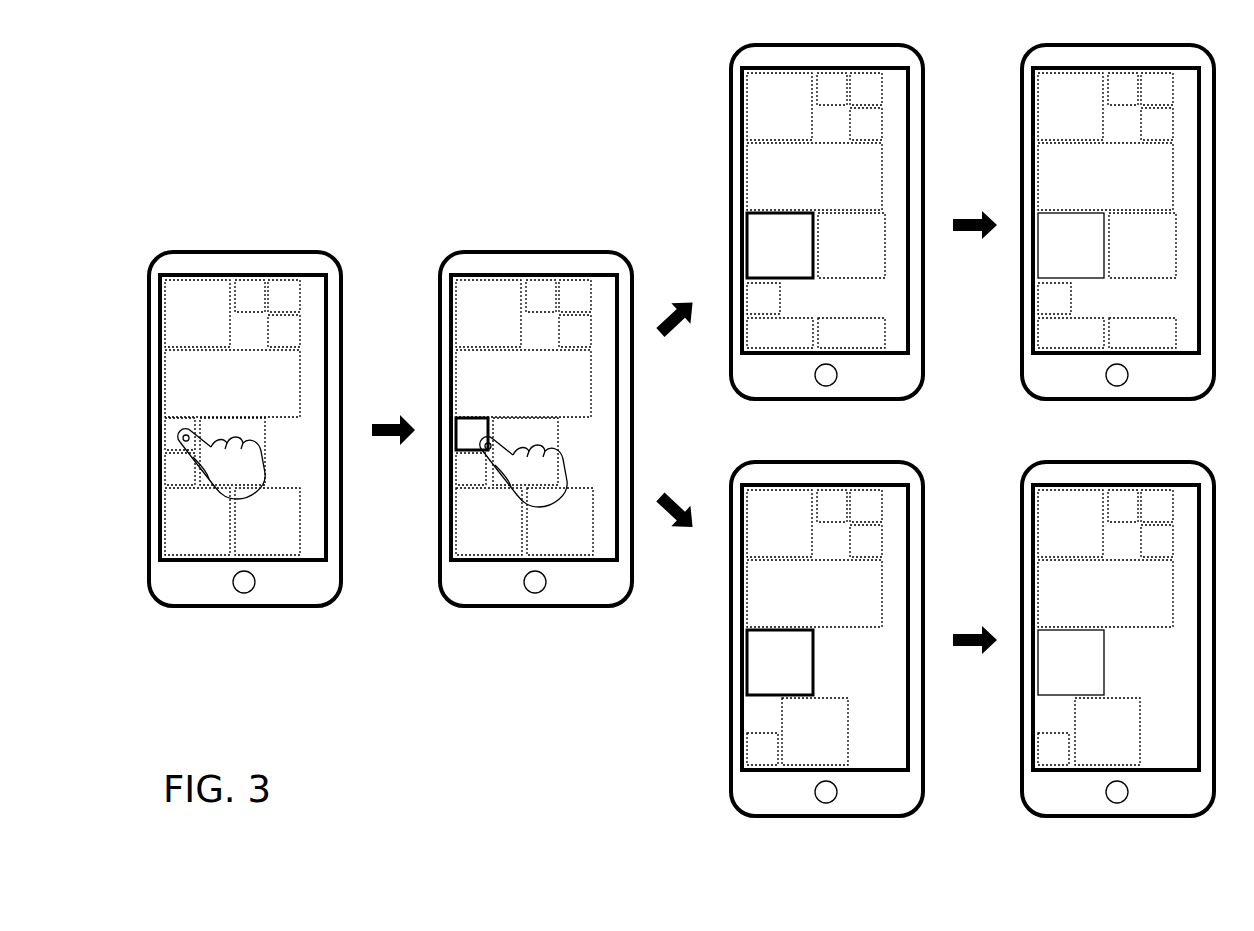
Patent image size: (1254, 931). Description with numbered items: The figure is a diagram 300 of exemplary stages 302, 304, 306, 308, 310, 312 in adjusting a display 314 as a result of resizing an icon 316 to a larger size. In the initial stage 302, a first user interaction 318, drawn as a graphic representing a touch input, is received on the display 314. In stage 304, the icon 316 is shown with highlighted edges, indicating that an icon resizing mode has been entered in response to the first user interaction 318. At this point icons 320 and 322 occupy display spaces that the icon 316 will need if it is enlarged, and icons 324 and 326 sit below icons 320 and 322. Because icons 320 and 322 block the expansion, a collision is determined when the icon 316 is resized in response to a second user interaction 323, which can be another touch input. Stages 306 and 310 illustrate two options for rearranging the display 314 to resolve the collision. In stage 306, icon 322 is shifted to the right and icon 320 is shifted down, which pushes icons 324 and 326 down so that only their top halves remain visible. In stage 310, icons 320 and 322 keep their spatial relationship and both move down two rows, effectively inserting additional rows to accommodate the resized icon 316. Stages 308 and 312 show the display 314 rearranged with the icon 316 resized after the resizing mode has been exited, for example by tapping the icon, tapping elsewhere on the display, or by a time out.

The diagram 300 is at (337, 145).
The initial stage 302 is at (245, 449).
The stage 304 is at (536, 449).
The stage 306 is at (779, 236).
The stage 308 is at (1082, 230).
The stage 310 is at (827, 652).
The stage 312 is at (1118, 652).
The display 314 is at (308, 298).
The icon 316 is at (181, 432).
The first user interaction 318 is at (221, 464).
The icon 320 is at (470, 468).
The icon 322 is at (834, 489).
The second user interaction 323 is at (523, 472).
The icon 324 is at (780, 436).
The icon 326 is at (851, 436).